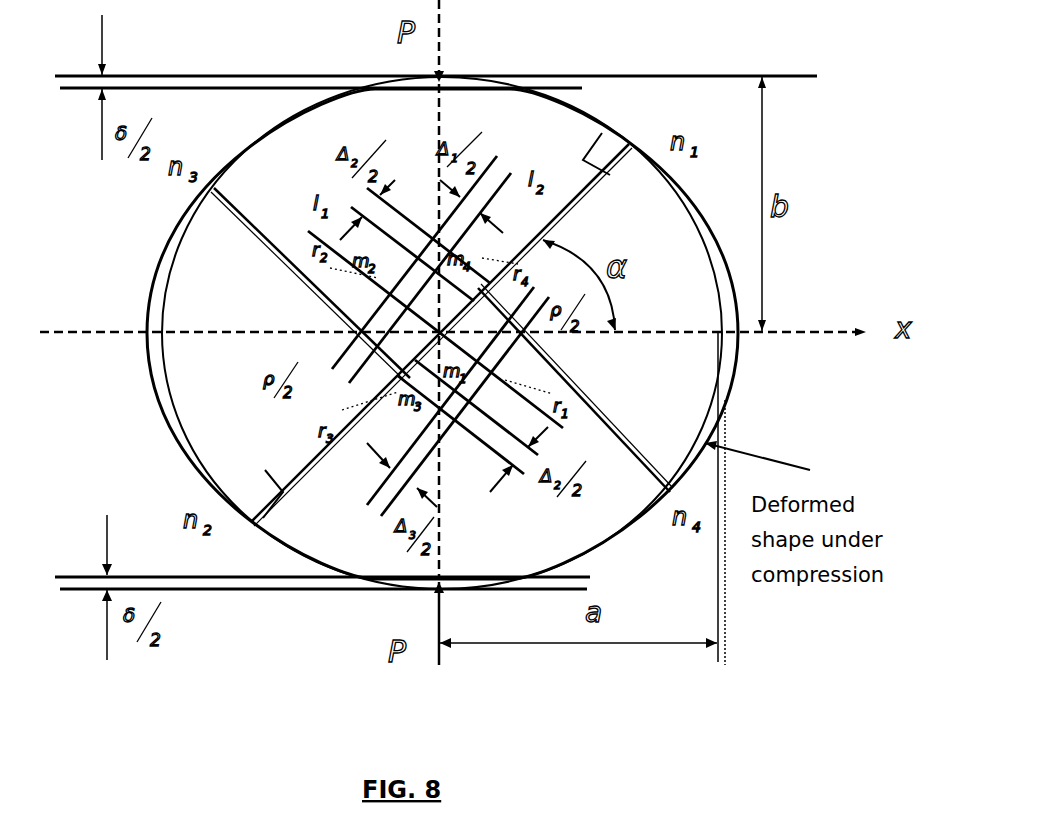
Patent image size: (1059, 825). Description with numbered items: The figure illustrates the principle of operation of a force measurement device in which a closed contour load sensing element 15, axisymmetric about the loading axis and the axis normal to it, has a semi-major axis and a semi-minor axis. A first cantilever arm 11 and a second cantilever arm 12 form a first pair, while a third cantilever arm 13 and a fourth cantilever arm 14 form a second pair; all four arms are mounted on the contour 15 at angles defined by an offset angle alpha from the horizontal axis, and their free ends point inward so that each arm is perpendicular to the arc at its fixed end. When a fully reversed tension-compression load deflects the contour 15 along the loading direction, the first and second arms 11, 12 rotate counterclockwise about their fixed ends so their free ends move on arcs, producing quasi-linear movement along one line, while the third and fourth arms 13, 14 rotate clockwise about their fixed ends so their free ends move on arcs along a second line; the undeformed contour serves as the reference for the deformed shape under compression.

The first cantilever arm 11 is at (575, 233).
The second cantilever arm 12 is at (307, 417).
The third cantilever arm 13 is at (268, 247).
The fourth cantilever arm 14 is at (600, 395).
The closed contour load sensing element 15 is at (158, 303).